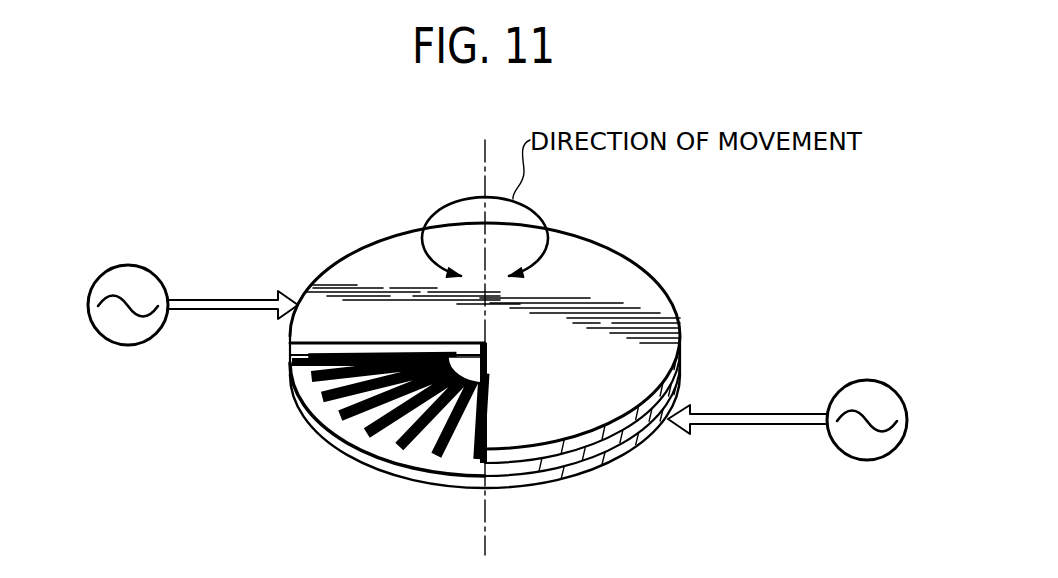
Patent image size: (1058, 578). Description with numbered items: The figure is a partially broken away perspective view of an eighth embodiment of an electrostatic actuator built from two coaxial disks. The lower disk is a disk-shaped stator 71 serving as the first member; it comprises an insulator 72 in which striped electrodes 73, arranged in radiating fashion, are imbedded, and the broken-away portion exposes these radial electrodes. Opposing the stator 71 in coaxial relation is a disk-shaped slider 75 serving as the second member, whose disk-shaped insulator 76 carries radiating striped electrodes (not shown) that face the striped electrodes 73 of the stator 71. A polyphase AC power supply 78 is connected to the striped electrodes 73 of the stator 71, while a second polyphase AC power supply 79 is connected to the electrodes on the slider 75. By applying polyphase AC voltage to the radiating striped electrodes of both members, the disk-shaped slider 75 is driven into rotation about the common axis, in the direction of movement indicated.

The disk-shaped stator 71 is at (377, 473).
The insulator 72 is at (455, 480).
The striped electrodes 73 is at (338, 436).
The disk-shaped slider 75 is at (690, 306).
The disk-shaped insulator 76 is at (668, 357).
The polyphase AC power supply 78 is at (869, 460).
The polyphase AC power supply 79 is at (139, 264).